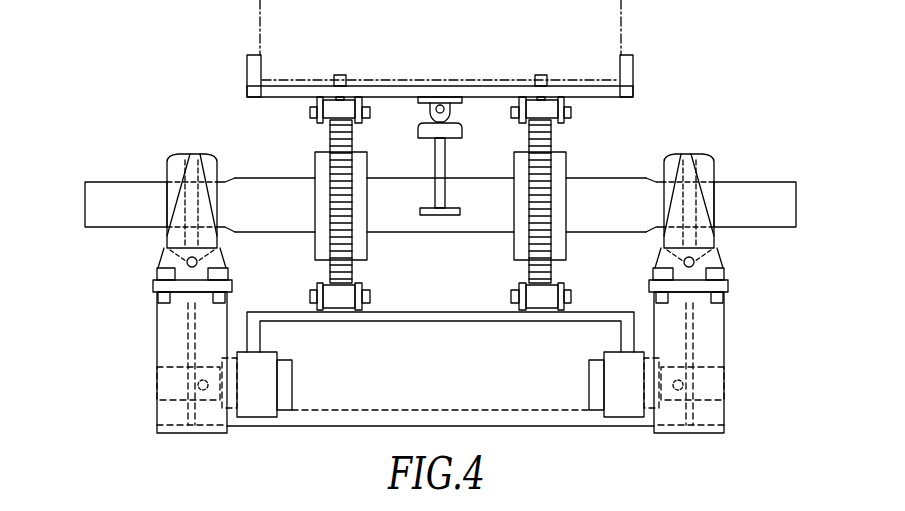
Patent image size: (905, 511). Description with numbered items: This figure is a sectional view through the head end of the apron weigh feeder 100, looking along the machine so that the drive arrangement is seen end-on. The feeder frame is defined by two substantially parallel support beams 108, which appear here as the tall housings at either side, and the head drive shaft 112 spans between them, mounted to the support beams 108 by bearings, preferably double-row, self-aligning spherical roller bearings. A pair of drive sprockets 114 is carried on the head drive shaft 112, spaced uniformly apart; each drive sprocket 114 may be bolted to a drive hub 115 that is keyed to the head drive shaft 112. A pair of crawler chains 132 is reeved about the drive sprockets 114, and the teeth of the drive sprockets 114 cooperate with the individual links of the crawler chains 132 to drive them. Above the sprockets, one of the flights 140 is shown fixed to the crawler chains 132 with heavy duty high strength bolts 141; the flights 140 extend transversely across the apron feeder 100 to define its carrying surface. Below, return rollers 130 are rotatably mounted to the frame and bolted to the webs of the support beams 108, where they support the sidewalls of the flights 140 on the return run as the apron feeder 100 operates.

The apron weigh feeder 100 is at (182, 76).
The support beams 108 is at (157, 320).
The head drive shaft 112 is at (84, 193).
The drive sprockets 114 is at (336, 146).
The drive hub 115 is at (314, 242).
The return rollers 130 is at (270, 387).
The crawler chains 132 is at (310, 112).
The flights 140 is at (245, 56).
The bolts 141 is at (339, 75).